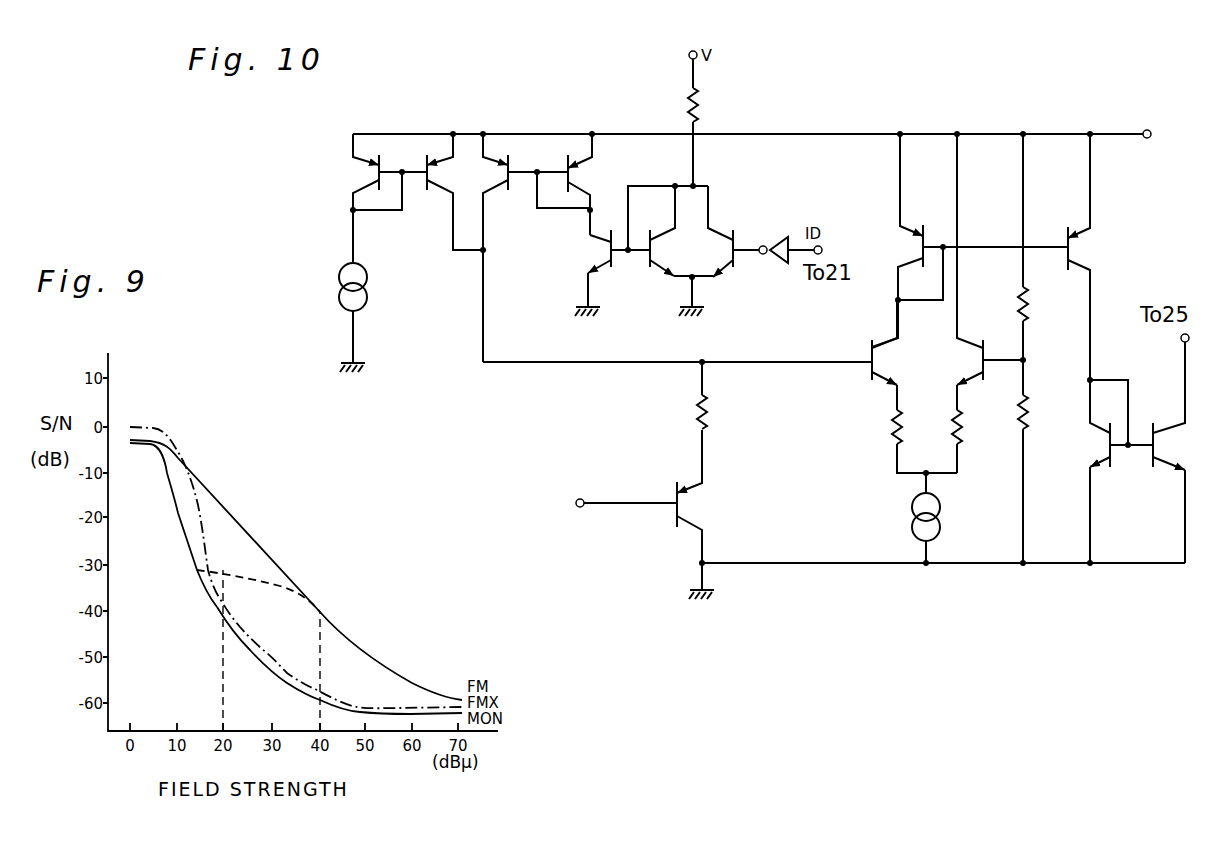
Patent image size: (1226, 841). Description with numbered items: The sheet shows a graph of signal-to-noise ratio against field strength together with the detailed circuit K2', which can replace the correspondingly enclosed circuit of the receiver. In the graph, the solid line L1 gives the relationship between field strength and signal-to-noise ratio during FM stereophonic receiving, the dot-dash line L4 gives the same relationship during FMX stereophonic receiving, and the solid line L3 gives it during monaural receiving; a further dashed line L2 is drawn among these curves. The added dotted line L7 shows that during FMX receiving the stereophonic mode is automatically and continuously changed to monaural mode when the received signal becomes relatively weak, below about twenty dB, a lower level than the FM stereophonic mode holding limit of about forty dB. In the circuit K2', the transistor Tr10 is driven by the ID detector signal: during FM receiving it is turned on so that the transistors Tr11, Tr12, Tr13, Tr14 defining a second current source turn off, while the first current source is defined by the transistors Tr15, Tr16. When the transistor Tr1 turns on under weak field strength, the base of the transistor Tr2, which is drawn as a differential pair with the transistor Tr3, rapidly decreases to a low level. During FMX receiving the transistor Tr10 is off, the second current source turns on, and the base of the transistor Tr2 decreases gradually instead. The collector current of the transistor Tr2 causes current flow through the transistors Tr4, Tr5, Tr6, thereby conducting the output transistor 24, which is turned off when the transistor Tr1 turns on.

In FIG. 10, the circuit K2' is at (757, 96).
In FIG. 10, the transistor Tr1 is at (690, 492).
In FIG. 10, the transistor Tr2 is at (892, 352).
In FIG. 10, the transistor Tr3 is at (966, 372).
In FIG. 10, the transistor Tr4 is at (910, 232).
In FIG. 10, the transistor Tr5 is at (1078, 235).
In FIG. 10, the transistor Tr6 is at (1094, 430).
In FIG. 10, the transistor Tr10 is at (712, 225).
In FIG. 10, the transistor Tr11 is at (500, 158).
In FIG. 10, the transistor Tr12 is at (570, 185).
In FIG. 10, the transistor Tr13 is at (598, 247).
In FIG. 10, the transistor Tr14 is at (658, 266).
In FIG. 10, the transistor Tr15 is at (440, 188).
In FIG. 10, the transistor Tr16 is at (360, 178).
In FIG. 10, the transistor 24 is at (1176, 428).
In FIG. 9, the solid line L1 is at (275, 558).
In FIG. 9, the S/N characteristic curve L2 is at (226, 574).
In FIG. 9, the solid line L3 is at (280, 675).
In FIG. 9, the dot-dash line L4 is at (270, 650).
In FIG. 9, the dotted line L7 is at (210, 605).